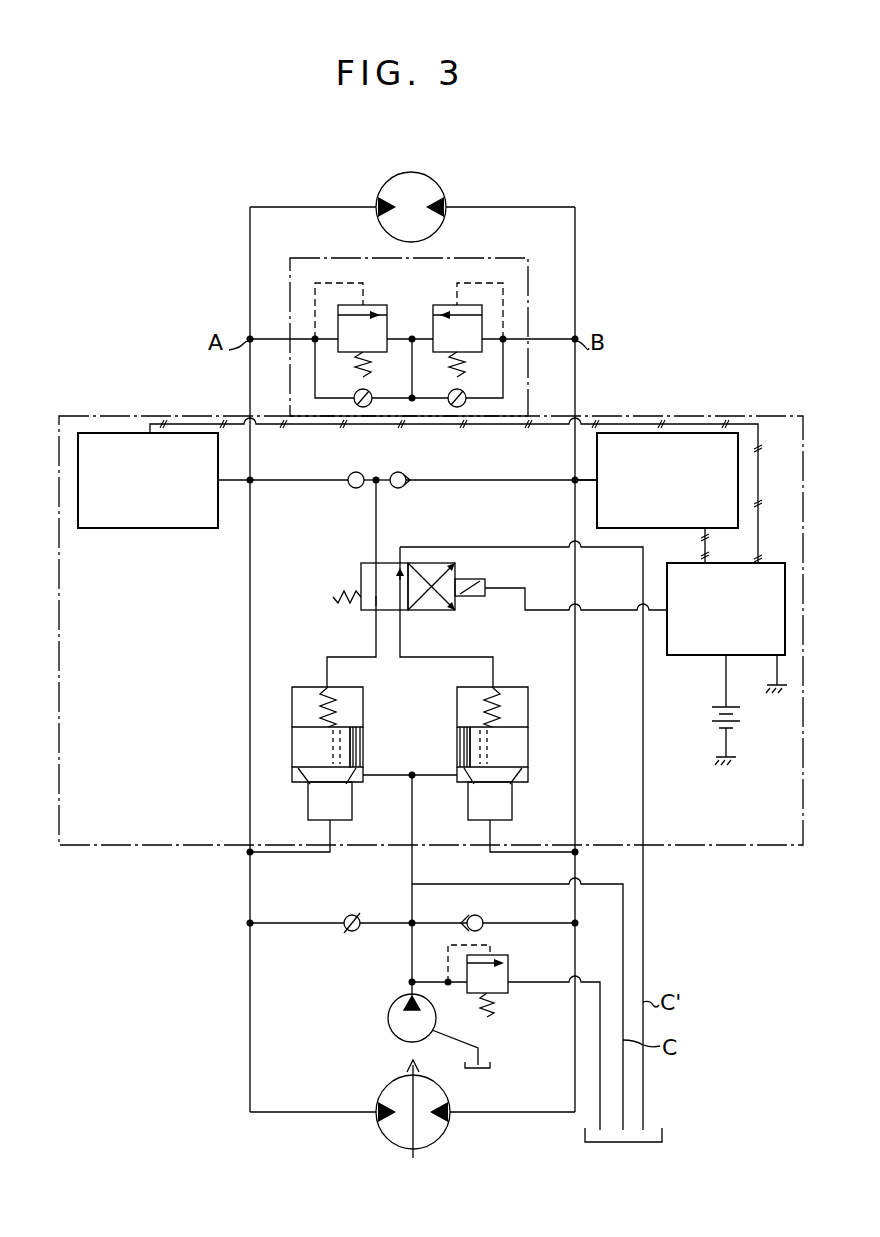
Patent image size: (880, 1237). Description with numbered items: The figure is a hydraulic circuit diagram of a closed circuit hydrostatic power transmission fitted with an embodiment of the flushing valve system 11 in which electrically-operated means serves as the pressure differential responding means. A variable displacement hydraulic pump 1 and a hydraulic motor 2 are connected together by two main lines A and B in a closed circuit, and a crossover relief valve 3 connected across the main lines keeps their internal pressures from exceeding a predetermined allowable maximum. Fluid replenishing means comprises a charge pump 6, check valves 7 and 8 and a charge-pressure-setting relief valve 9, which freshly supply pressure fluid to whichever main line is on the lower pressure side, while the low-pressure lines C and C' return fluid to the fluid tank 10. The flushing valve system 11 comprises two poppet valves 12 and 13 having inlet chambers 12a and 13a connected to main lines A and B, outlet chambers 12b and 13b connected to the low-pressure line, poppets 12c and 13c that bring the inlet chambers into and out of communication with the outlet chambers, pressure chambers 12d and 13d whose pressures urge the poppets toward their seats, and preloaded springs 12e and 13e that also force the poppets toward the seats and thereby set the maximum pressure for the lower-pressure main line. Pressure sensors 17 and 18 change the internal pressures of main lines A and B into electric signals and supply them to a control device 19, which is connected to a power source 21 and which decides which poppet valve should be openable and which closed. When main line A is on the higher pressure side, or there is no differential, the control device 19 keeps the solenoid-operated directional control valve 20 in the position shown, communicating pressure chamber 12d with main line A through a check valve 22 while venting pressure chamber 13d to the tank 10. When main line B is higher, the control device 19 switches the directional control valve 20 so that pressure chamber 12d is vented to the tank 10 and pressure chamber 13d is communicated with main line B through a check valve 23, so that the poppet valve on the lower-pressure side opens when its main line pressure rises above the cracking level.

The variable displacement hydraulic pump 1 is at (393, 1127).
The hydraulic motor 2 is at (437, 192).
The crossover relief valve 3 is at (520, 258).
The charge pump 6 is at (400, 1002).
The check valve 7 is at (358, 918).
The check valve 8 is at (481, 917).
The charge-pressure-setting relief valve 9 is at (509, 975).
The fluid tank 10 is at (655, 1128).
The flushing valve system 11 is at (144, 413).
The poppet valve 12 is at (329, 758).
The inlet chamber 12a is at (345, 817).
The outlet chamber 12b is at (356, 778).
The poppet 12c is at (350, 747).
The pressure chamber 12d is at (350, 716).
The spring 12e is at (352, 687).
The poppet valve 13 is at (496, 758).
The inlet chamber 13a is at (477, 817).
The outlet chamber 13b is at (466, 778).
The poppet 13c is at (470, 747).
The pressure chamber 13d is at (470, 716).
The spring 13e is at (468, 687).
The pressure sensor 17 is at (196, 528).
The pressure sensor 18 is at (680, 528).
The control device 19 is at (698, 655).
The solenoid-operated directional control valve 20 is at (360, 612).
The power source 21 is at (720, 722).
The check valve 22 is at (352, 473).
The check valve 23 is at (391, 474).